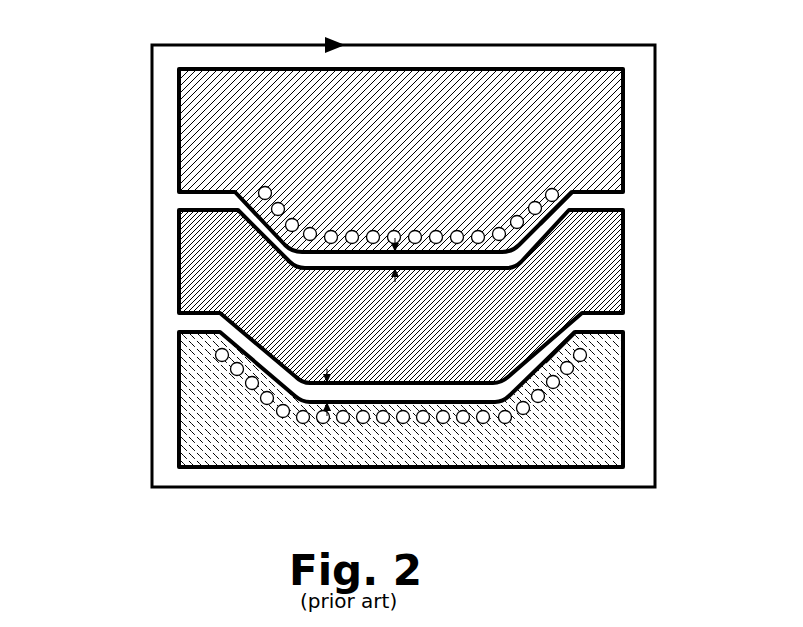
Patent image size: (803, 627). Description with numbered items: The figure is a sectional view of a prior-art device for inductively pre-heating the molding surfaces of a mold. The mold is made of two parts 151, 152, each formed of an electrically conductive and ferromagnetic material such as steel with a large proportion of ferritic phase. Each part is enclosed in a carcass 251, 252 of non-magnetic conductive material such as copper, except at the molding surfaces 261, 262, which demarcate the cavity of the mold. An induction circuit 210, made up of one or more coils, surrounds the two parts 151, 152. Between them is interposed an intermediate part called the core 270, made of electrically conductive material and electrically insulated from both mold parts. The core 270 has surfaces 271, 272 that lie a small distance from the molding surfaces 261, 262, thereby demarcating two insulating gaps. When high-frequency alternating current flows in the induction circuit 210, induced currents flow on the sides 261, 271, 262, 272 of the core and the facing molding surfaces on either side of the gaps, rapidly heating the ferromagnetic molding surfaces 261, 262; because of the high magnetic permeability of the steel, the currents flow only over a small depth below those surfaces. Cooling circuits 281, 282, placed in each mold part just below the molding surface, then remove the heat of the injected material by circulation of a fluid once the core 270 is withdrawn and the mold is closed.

The induction circuit 210 is at (194, 45).
The mold part 152 is at (195, 165).
The carcass 252 is at (623, 130).
The cooling circuit 281 is at (597, 185).
The molding surface 262 is at (352, 252).
The core 270 is at (180, 280).
The core surface 272 is at (487, 222).
The mold part 151 is at (215, 403).
The molding surface 261 is at (432, 392).
The core surface 271 is at (403, 385).
The cooling circuit 282 is at (587, 357).
The carcass 251 is at (623, 401).